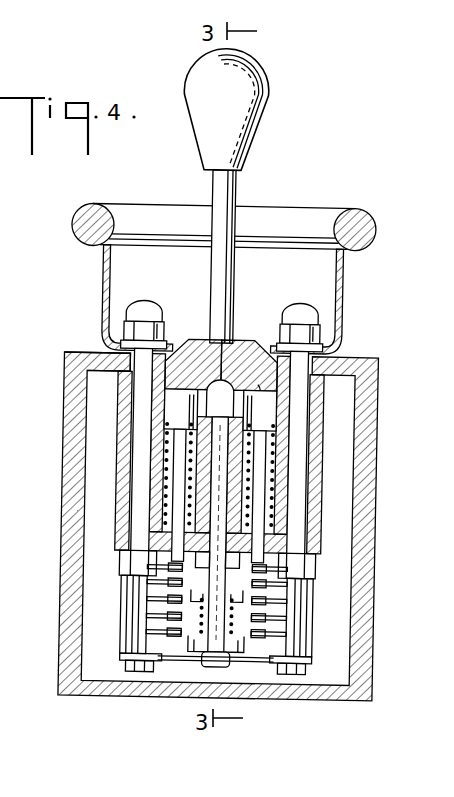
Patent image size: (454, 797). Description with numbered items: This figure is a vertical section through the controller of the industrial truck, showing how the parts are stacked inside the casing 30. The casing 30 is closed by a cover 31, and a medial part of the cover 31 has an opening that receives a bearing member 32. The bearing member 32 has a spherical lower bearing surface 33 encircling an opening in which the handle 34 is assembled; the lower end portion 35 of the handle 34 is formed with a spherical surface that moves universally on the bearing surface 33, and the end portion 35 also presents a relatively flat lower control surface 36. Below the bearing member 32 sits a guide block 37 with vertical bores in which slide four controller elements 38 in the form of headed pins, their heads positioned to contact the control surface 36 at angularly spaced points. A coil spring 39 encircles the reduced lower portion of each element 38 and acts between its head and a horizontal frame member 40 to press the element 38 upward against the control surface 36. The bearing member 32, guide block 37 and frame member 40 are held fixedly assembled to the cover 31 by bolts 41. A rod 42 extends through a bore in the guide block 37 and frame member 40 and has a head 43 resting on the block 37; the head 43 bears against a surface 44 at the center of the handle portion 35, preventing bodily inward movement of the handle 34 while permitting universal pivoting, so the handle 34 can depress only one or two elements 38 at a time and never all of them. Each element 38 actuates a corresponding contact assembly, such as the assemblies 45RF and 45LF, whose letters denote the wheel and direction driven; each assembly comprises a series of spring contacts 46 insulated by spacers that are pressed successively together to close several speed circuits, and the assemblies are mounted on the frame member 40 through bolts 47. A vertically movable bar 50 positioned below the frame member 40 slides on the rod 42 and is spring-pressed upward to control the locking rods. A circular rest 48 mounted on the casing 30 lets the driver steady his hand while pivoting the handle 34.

The casing 30 is at (66, 413).
The cover 31 is at (67, 356).
The bearing member 32 is at (346, 357).
The spherical lower bearing surface 33 is at (160, 377).
The handle 34 is at (268, 99).
The lower end portion of the handle 35 is at (233, 338).
The relatively flat lower control surface 36 is at (248, 383).
The guide block 37 is at (320, 462).
The controller elements 38 is at (172, 412).
The coil spring 39 is at (167, 455).
The horizontal frame member 40 is at (318, 542).
The bolts 41 is at (133, 503).
The rod 42 is at (223, 498).
The head 43 is at (238, 352).
The surface 44 is at (198, 354).
The contact assembly 45RF is at (104, 605).
The contact assembly 45LF is at (326, 614).
The spring contacts 46 is at (140, 619).
The bolts 47 is at (141, 670).
The circular rest 48 is at (372, 223).
The vertically movable bar 50 is at (232, 566).